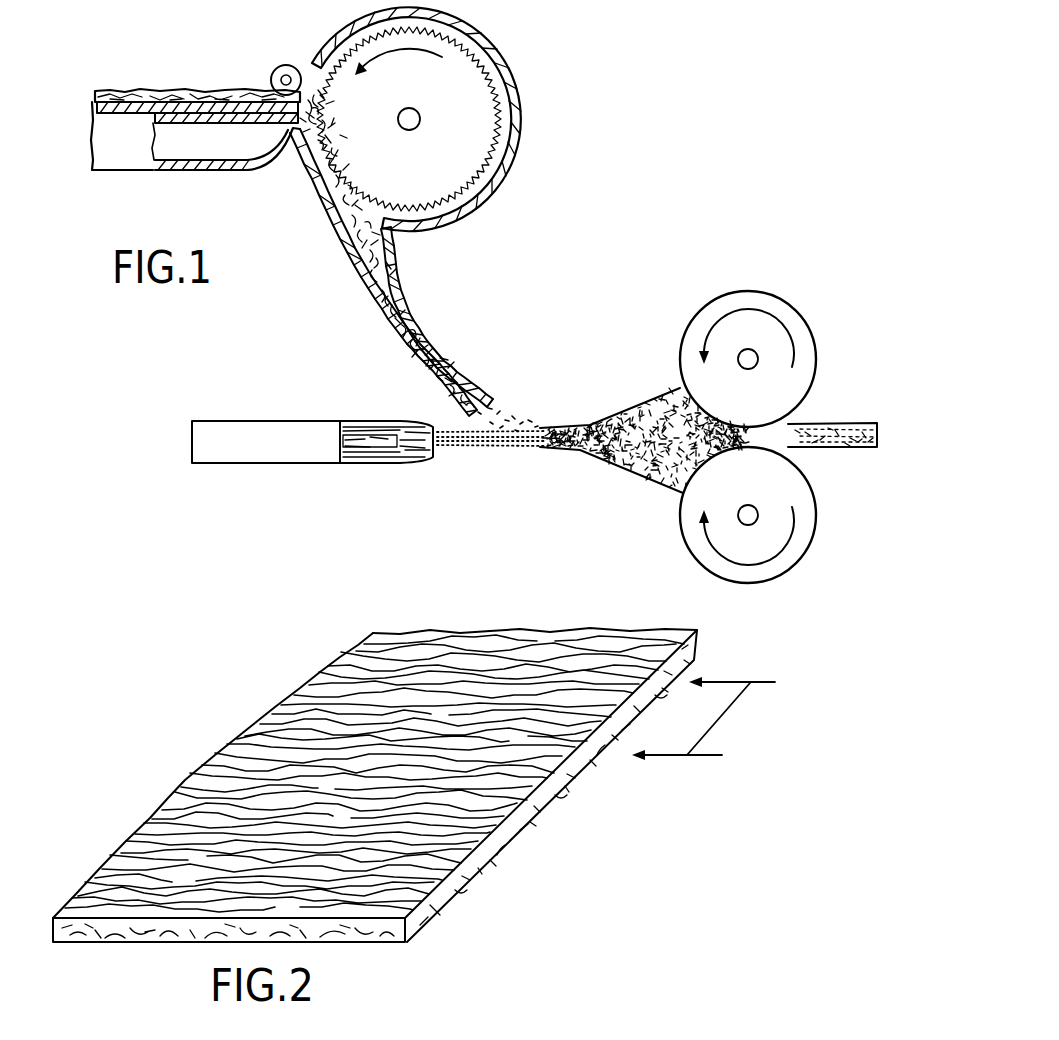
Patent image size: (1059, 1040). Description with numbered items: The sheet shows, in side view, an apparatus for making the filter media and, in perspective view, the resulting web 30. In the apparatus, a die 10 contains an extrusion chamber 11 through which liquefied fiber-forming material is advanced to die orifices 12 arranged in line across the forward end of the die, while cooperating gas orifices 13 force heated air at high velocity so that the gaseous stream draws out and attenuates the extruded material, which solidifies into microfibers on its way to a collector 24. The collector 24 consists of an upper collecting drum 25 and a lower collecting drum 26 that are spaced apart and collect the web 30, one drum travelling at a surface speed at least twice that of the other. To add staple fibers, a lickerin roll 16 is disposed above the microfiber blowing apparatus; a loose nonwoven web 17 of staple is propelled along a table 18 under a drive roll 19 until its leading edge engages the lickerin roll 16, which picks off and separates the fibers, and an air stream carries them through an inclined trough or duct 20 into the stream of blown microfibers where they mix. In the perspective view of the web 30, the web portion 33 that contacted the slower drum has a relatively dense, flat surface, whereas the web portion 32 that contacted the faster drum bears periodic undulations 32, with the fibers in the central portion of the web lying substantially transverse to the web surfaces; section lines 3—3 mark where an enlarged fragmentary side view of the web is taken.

In FIG. 1, the die 10 is at (262, 414).
In FIG. 1, the extrusion chamber 11 is at (362, 440).
In FIG. 1, the die orifices 12 is at (436, 443).
In FIG. 1, the gas orifices 13 is at (405, 460).
In FIG. 1, the lickerin roll 16 is at (456, 152).
In FIG. 1, the web of staple 17 is at (247, 92).
In FIG. 1, the table 18 is at (148, 106).
In FIG. 1, the drive roll 19 is at (293, 63).
In FIG. 1, the inclined trough or duct 20 is at (345, 227).
In FIG. 1, the collector 24 is at (641, 338).
In FIG. 1, the upper collecting drum 25 is at (781, 313).
In FIG. 1, the lower collecting drum 26 is at (796, 556).
In FIG. 1, the web 30 is at (846, 411).
In FIG. 2, the web 30 is at (218, 718).
In FIG. 2, the undulated web portion 32 is at (581, 627).
In FIG. 2, the flat web portion 33 is at (572, 778).
In FIG. 2, the section lines 3— 3 is at (717, 718).